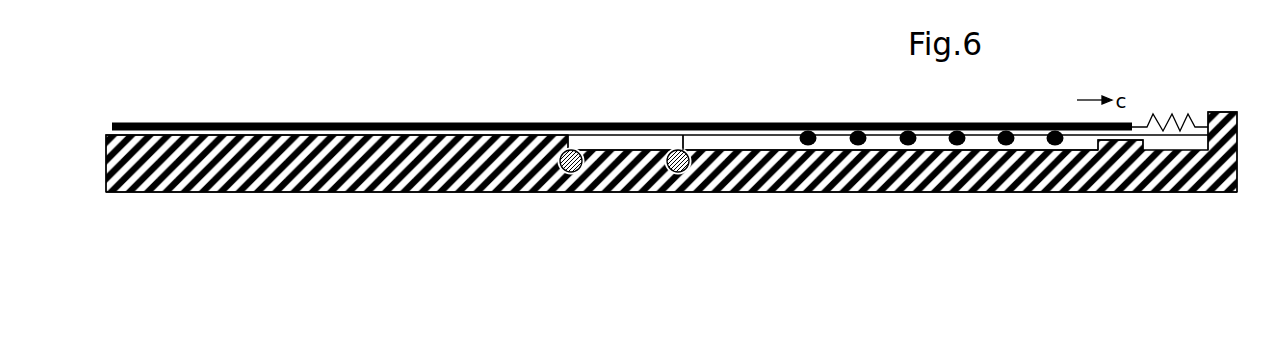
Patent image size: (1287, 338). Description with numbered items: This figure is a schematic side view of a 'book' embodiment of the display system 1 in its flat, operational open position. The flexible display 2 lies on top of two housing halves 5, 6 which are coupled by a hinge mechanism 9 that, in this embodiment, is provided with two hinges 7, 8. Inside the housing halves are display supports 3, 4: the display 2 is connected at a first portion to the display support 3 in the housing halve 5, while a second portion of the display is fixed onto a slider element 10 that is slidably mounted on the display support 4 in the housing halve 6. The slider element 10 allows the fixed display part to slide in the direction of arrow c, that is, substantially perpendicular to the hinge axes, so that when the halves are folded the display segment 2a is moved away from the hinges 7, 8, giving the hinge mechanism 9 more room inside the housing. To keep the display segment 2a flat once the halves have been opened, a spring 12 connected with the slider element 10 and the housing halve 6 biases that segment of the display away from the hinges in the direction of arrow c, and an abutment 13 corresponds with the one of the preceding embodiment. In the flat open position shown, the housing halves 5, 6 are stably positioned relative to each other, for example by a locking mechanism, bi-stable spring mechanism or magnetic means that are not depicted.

The display system 1 is at (817, 226).
The display 2 is at (361, 123).
The display segment 2a is at (687, 123).
The display support 3 is at (212, 180).
The display support 4 is at (958, 180).
The housing halve 5 is at (432, 198).
The housing halve 6 is at (1196, 203).
The hinge 7 is at (571, 175).
The hinge 8 is at (682, 175).
The hinge mechanism 9 is at (623, 180).
The slider element 10 is at (1025, 123).
The spring 12 is at (1175, 117).
The abutment 13 is at (1121, 145).